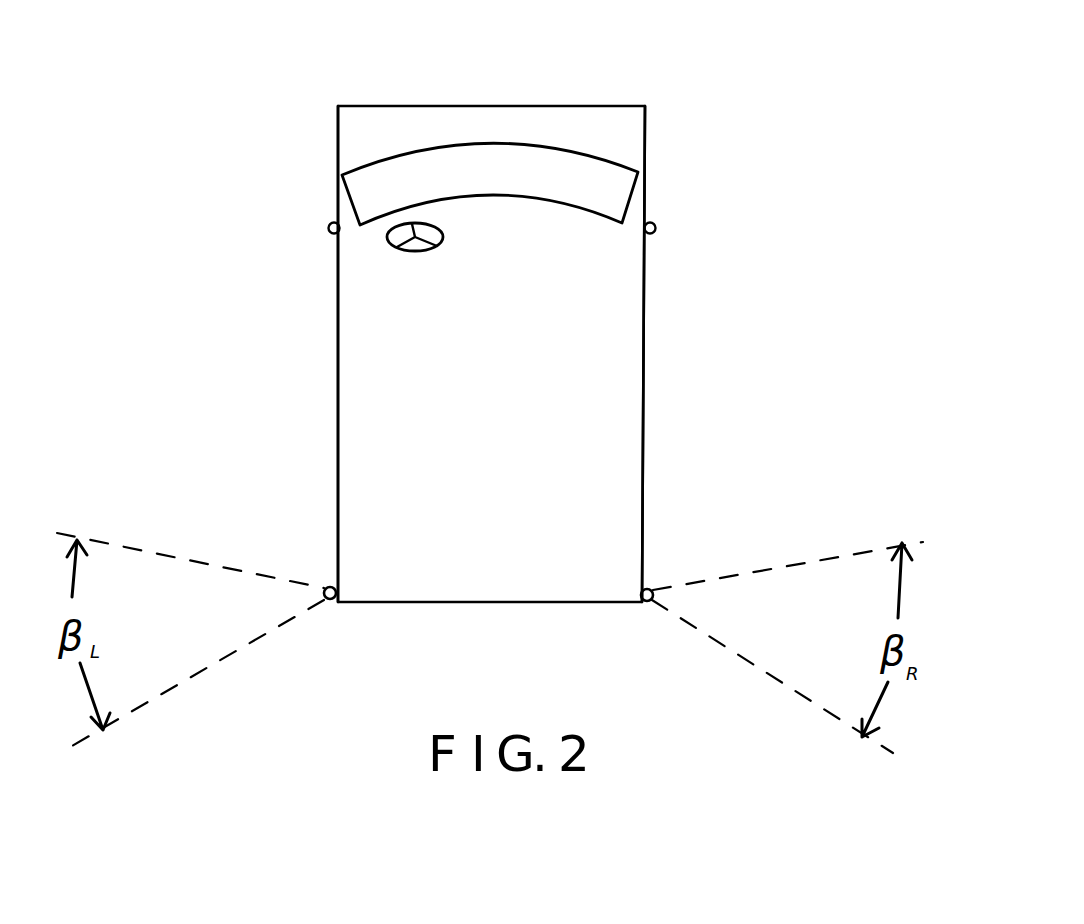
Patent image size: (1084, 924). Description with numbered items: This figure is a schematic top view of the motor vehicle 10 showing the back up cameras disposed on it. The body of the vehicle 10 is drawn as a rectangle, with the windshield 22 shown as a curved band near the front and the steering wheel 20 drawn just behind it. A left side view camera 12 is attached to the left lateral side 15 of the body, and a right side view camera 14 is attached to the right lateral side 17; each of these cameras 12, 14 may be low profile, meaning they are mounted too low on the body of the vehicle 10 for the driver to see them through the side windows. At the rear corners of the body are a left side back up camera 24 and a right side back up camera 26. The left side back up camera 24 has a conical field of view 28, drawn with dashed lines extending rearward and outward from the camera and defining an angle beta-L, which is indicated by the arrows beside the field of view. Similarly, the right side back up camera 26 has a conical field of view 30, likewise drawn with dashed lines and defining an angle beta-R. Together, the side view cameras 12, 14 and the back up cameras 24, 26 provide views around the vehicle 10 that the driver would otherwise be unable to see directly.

The motor vehicle 10 is at (507, 393).
The left side view camera 12 is at (330, 226).
The right side view camera 14 is at (655, 228).
The left lateral side 15 is at (337, 367).
The right lateral side 17 is at (646, 340).
The steering wheel 20 is at (445, 235).
The windshield 22 is at (503, 158).
The left side back up camera 24 is at (333, 588).
The right side back up camera 26 is at (649, 590).
The conical field of view 28 is at (65, 720).
The conical field of view 30 is at (893, 725).